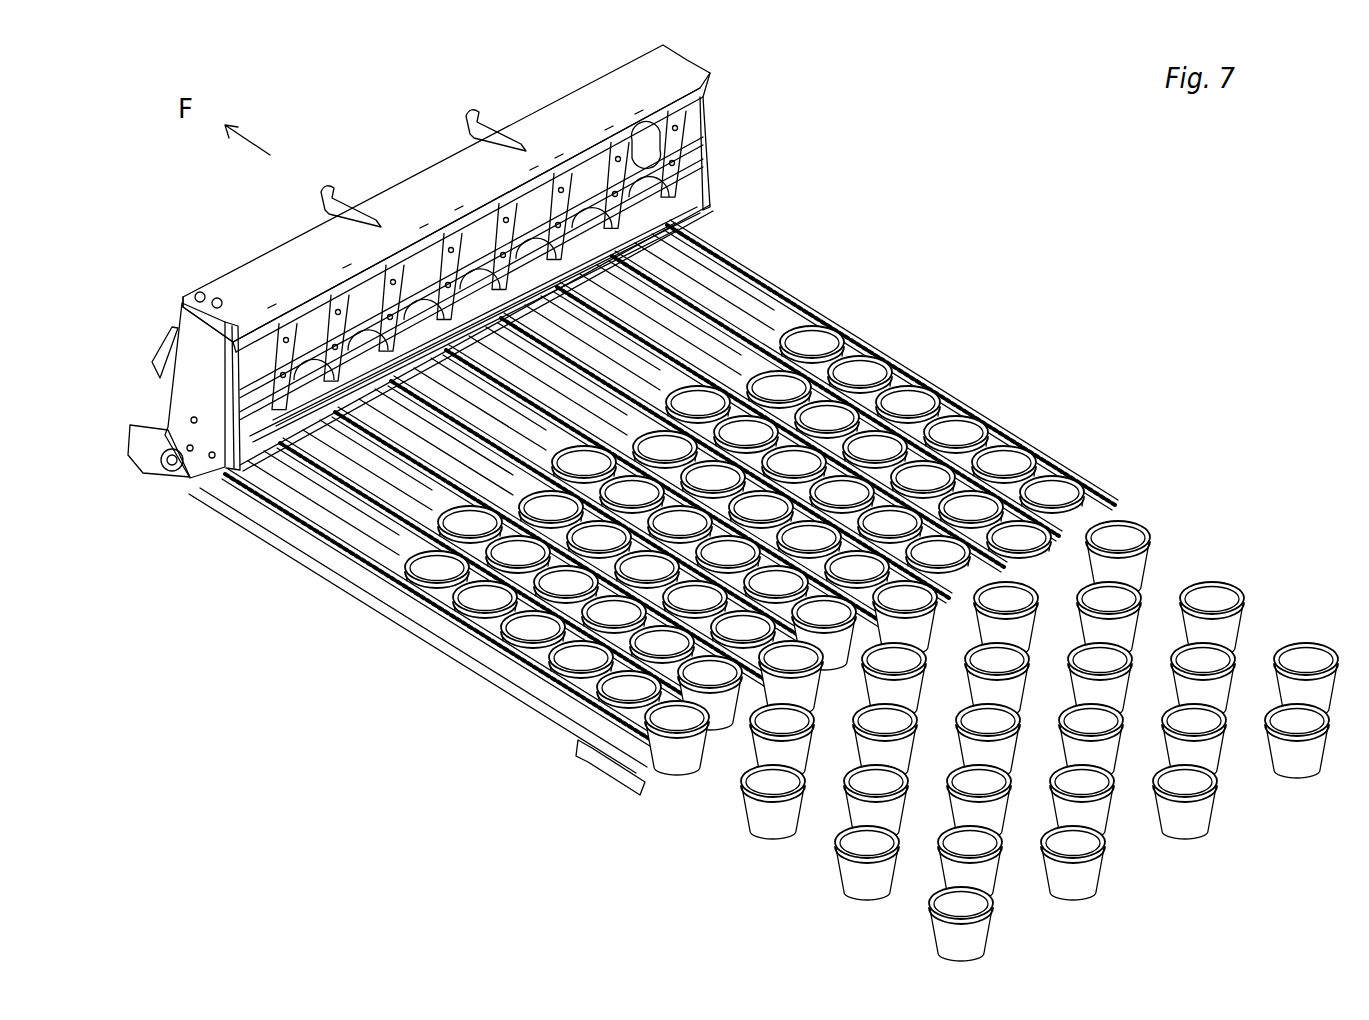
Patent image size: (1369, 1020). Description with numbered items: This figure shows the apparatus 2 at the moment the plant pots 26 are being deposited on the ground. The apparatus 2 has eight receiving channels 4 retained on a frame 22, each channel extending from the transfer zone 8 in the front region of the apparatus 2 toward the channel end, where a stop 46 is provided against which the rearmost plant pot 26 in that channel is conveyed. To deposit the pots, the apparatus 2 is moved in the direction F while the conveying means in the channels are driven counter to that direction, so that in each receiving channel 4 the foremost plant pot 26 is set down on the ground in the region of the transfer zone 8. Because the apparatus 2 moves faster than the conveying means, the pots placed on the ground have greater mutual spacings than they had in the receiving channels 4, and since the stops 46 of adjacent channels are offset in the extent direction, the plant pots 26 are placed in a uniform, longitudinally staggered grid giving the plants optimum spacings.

The apparatus 2 is at (886, 182).
The receiving channels 4 is at (683, 345).
The transfer zone 8 is at (1102, 498).
The frame 22 is at (445, 185).
The plant pot 26 is at (950, 564).
The stop 46 is at (300, 425).